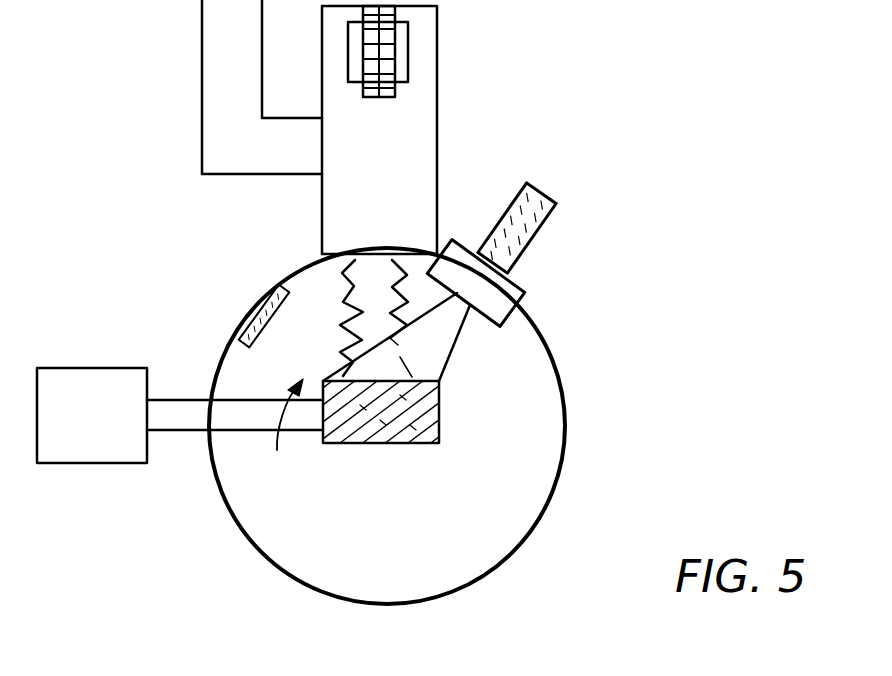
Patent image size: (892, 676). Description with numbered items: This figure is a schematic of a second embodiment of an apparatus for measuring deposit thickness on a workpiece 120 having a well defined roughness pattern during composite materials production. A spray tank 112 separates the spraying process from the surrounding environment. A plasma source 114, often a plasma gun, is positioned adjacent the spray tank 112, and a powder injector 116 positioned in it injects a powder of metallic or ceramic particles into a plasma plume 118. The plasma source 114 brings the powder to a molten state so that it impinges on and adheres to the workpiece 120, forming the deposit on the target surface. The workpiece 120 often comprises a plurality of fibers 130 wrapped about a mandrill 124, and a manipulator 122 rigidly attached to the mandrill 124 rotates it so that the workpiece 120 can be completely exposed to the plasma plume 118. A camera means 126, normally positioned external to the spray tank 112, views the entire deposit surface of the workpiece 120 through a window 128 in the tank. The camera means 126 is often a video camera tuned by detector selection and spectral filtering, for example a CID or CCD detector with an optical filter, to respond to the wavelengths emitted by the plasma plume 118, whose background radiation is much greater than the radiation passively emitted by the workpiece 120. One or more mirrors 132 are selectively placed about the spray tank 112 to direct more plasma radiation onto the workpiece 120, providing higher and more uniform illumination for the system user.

The spray tank 112 is at (563, 395).
The plasma source 114 is at (423, 170).
The powder injector 116 is at (395, 50).
The plasma plume 118 is at (370, 327).
The workpiece 120 is at (437, 413).
The manipulator 122 is at (105, 465).
The mandrill 124 is at (320, 432).
The camera means 126 is at (510, 233).
The window 128 is at (523, 295).
The fibers 130 is at (413, 445).
The mirrors 132 is at (247, 317).